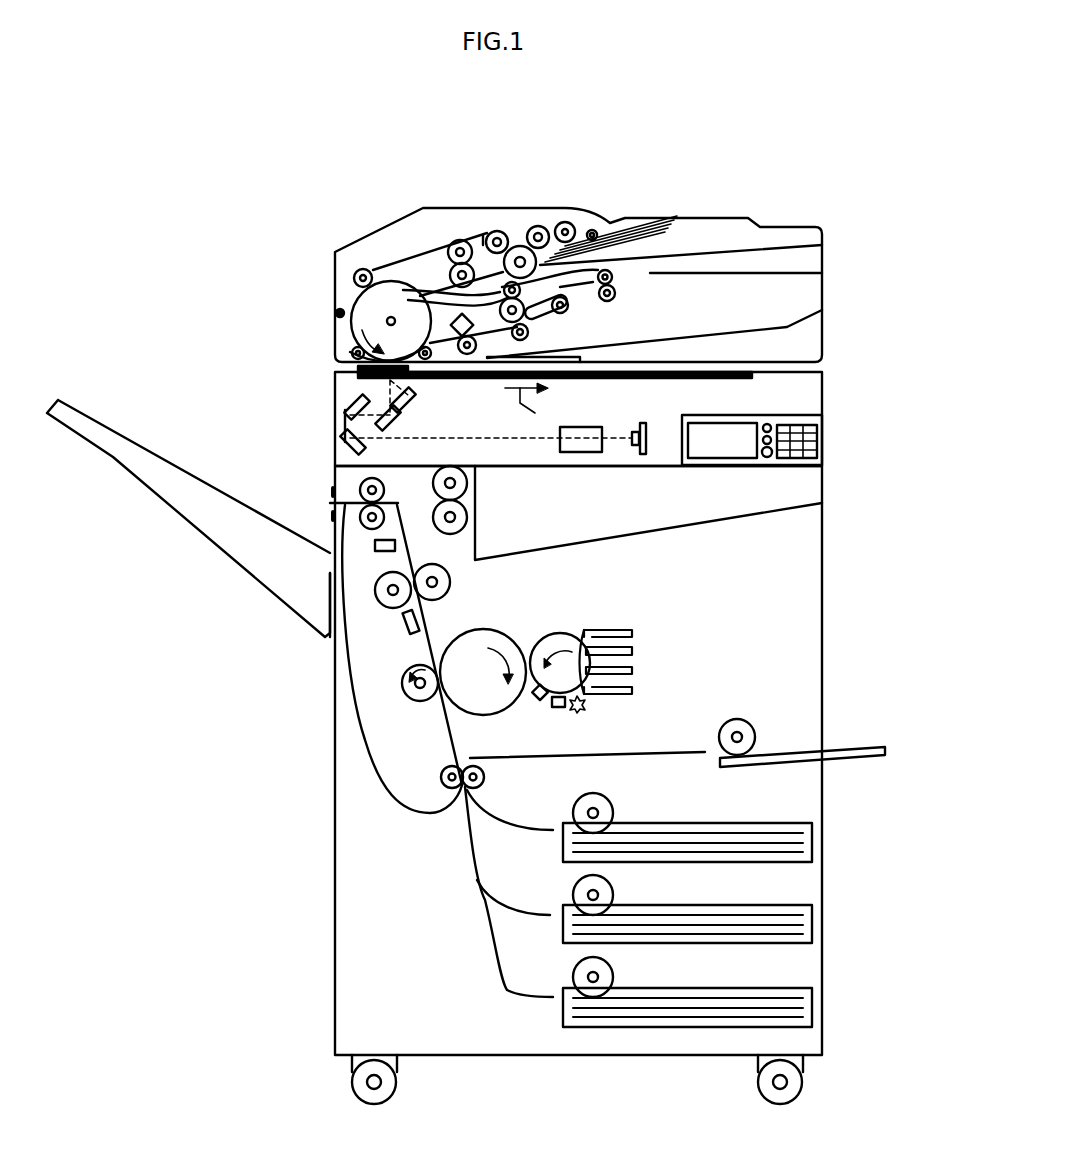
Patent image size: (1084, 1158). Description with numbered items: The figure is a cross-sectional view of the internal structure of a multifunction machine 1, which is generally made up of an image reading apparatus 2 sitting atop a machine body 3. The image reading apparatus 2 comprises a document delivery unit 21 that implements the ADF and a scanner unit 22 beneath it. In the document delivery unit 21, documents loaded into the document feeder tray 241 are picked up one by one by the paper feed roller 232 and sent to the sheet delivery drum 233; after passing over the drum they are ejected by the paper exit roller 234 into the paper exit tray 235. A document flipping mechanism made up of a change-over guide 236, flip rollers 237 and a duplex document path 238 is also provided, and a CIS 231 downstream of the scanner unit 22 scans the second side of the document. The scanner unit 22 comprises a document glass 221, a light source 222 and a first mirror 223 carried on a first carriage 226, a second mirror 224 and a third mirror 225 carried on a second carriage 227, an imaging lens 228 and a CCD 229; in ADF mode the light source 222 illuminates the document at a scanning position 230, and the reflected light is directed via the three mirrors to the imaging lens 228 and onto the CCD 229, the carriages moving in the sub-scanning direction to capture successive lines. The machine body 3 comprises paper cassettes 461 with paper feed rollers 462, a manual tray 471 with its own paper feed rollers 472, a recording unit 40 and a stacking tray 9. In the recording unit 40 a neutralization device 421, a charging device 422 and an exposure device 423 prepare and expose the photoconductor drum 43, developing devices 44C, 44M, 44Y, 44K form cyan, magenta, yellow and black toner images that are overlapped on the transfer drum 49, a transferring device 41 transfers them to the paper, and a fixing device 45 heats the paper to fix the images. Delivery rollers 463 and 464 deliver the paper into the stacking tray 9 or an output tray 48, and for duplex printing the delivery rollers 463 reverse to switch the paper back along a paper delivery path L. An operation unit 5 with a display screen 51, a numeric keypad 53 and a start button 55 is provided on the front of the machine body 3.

The multifunction machine 1 is at (276, 212).
The image reading apparatus 2 is at (599, 338).
The document delivery unit 21 is at (572, 257).
The scanner unit 22 is at (599, 444).
The machine body 3 is at (796, 618).
The operation unit 5 is at (770, 458).
The stacking tray 9 is at (241, 572).
The recording unit 40 is at (390, 672).
The transferring device 41 is at (404, 695).
The photoconductor drum 43 is at (568, 645).
The developing device 44C is at (634, 633).
The developing device 44M is at (634, 651).
The developing device 44Y is at (634, 670).
The developing device 44K is at (634, 691).
The fixing device 45 is at (393, 606).
The output tray 48 is at (730, 525).
The transfer drum 49 is at (472, 642).
The display screen 51 is at (728, 432).
The numeric keypad 53 is at (809, 444).
The start button 55 is at (763, 456).
The document glass 221 is at (565, 380).
The light source 222 is at (400, 418).
The first mirror 223 is at (396, 425).
The second mirror 224 is at (348, 408).
The third mirror 225 is at (346, 440).
The first carriage 226 is at (412, 395).
The second carriage 227 is at (345, 466).
The imaging lens 228 is at (578, 455).
The charge coupled device (CCD) 229 is at (643, 456).
The scanning position 230 is at (355, 374).
The CIS 231 is at (357, 300).
The paper feed roller 232 is at (568, 222).
The sheet delivery drum 233 is at (345, 297).
The paper exit roller 234 is at (520, 330).
The paper exit tray 235 is at (708, 330).
The change-over guide 236 is at (572, 314).
The flip rollers 237 is at (616, 290).
The duplex document path 238 is at (455, 312).
The document feeder tray 241 is at (695, 242).
The neutralization device 421 is at (540, 702).
The charging device 422 is at (558, 709).
The exposure device 423 is at (580, 712).
The paper cassettes 461 is at (747, 908).
The paper feed rollers 462 is at (614, 812).
The delivery rollers 463 is at (468, 483).
The delivery rollers 464 is at (358, 486).
The manual tray 471 is at (870, 745).
The paper feed rollers 472 is at (735, 718).
The paper delivery path L is at (345, 659).